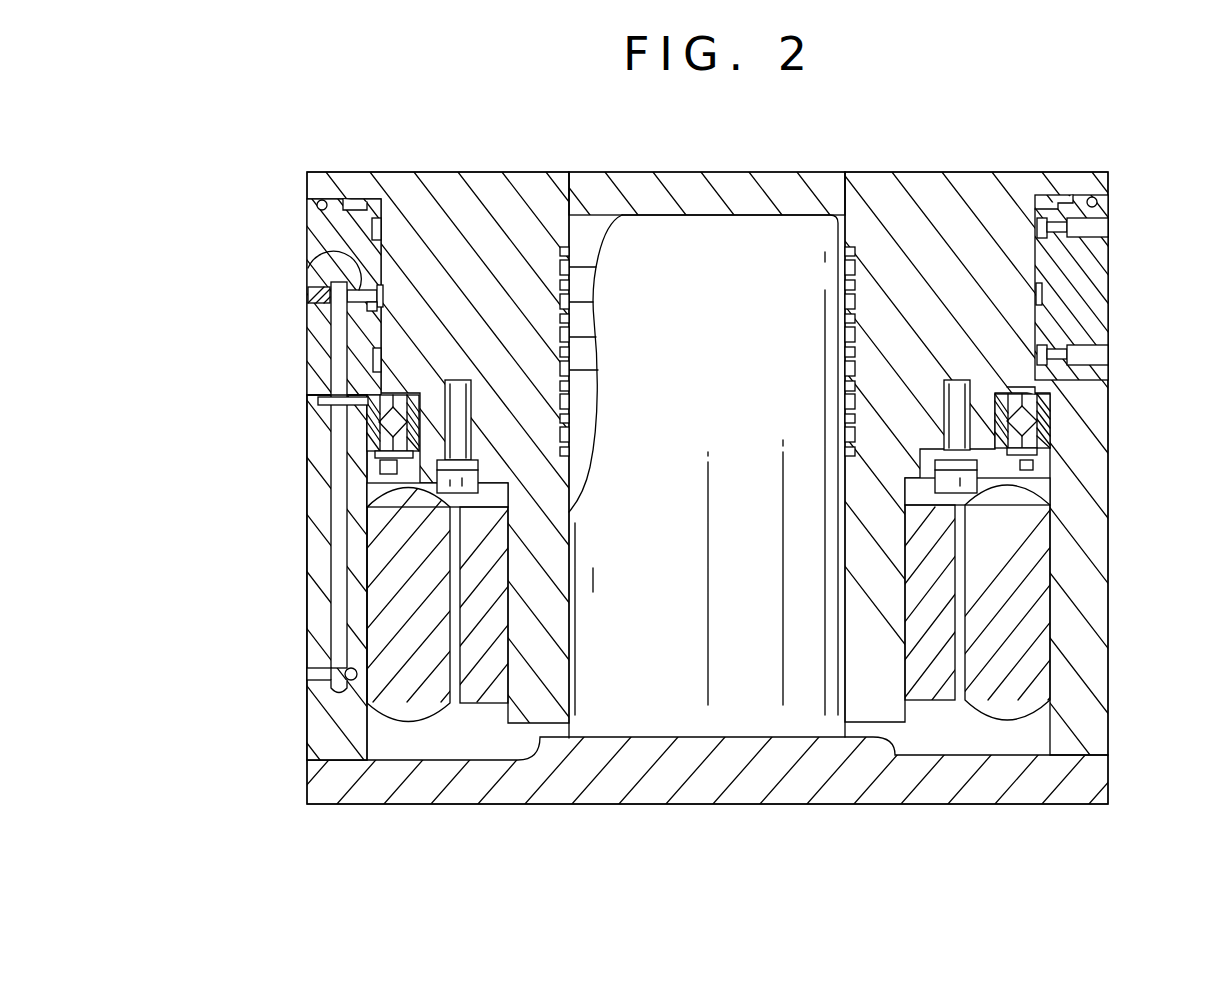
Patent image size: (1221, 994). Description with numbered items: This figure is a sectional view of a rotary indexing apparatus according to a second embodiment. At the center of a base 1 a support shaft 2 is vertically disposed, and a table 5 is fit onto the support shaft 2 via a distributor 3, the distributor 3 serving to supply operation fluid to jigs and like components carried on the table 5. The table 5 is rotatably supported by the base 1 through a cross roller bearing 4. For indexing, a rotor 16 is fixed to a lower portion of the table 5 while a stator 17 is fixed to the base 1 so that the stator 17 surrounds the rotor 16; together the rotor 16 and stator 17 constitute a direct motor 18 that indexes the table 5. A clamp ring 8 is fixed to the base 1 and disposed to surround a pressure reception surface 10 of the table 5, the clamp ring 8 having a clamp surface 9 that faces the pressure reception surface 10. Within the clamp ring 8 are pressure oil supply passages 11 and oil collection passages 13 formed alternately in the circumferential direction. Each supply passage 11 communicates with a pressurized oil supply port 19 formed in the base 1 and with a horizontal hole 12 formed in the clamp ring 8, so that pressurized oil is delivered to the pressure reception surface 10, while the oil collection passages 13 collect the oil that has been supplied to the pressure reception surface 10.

The base 1 is at (820, 790).
The support shaft 2 is at (770, 232).
The distributor 3 is at (852, 265).
The cross roller bearing 4 is at (418, 393).
The table 5 is at (968, 178).
The clamp ring 8 is at (318, 244).
The clamp surface 9 is at (385, 268).
The pressure reception surface 10 is at (392, 296).
The pressure oil supply passage 11 is at (322, 352).
The horizontal hole 12 is at (328, 270).
The oil collection passage 13 is at (1108, 352).
The rotor 16 is at (934, 690).
The stator 17 is at (996, 688).
The direct motor 18 is at (711, 640).
The pressurized oil supply port 19 is at (313, 676).